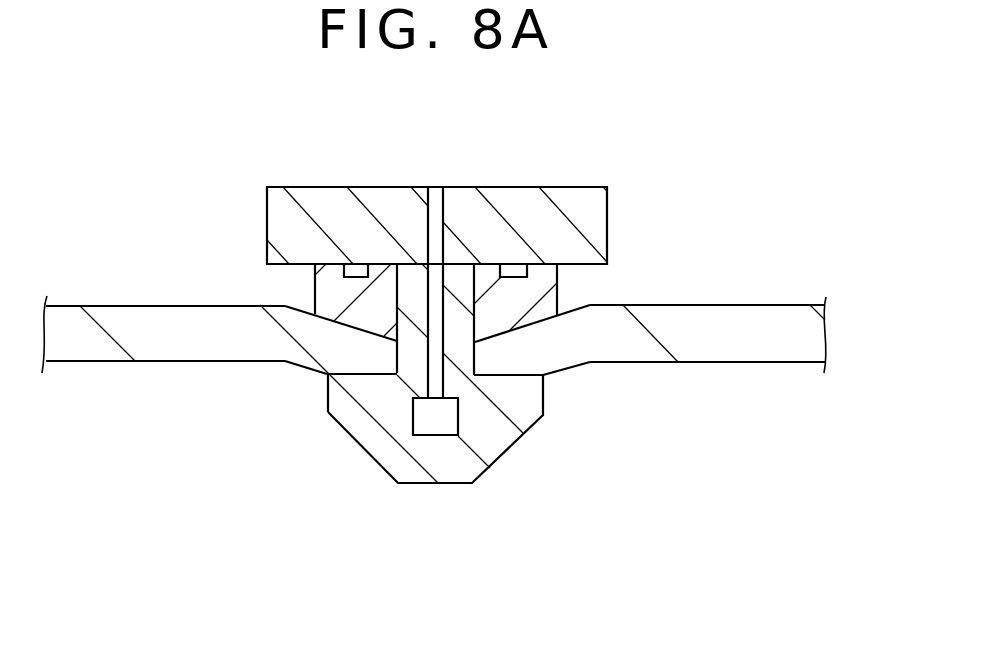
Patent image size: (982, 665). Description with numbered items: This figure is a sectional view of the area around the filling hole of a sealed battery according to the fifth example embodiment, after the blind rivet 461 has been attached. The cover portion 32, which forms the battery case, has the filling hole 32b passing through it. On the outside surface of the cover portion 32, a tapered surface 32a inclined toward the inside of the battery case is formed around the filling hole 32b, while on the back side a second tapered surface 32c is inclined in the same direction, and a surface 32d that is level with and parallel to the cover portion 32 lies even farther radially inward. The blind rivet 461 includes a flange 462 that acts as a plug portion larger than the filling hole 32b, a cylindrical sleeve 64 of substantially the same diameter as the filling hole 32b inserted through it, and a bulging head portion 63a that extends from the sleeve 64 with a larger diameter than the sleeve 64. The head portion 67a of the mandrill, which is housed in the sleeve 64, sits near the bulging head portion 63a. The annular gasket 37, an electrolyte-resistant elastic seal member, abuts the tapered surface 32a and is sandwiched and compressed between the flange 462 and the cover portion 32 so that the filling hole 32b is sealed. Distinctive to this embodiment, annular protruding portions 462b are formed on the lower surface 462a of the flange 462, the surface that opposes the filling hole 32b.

The blind rivet 461 is at (241, 159).
The flange 462 is at (542, 222).
The lower surface 462a is at (600, 267).
The annular protruding portions 462b is at (356, 272).
The sleeve 64 is at (418, 302).
The cover portion 32 is at (157, 333).
The tapered surface 32a is at (295, 303).
The filling hole 32b is at (352, 378).
The tapered surface 32c is at (327, 372).
The surface 32d is at (403, 389).
The gasket 37 is at (548, 300).
The bulging head portion 63a is at (497, 397).
The head portion 67a is at (427, 417).